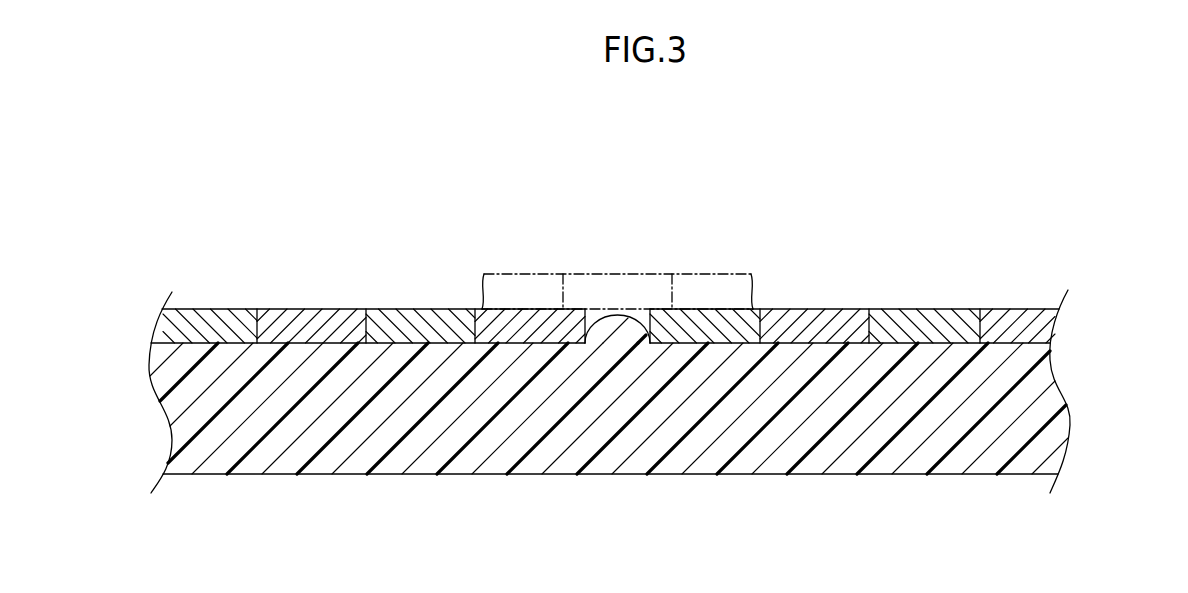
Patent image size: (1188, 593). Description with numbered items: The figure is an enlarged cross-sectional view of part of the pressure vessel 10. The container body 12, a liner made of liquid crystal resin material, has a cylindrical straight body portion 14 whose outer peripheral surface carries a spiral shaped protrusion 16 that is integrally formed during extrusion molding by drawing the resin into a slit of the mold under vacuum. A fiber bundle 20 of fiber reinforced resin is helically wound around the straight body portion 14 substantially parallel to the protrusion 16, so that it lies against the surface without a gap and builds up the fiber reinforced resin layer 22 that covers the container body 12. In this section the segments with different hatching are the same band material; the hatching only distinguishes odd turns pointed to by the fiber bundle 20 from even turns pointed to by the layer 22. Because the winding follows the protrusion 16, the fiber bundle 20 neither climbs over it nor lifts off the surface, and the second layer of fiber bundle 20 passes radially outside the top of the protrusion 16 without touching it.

The pressure vessel 10 is at (653, 352).
The container body 12 is at (653, 380).
The straight body portion 14 is at (573, 463).
The protrusion 16 is at (613, 323).
The fiber bundle 20 is at (407, 309).
The fiber reinforced resin layer 22 is at (815, 306).